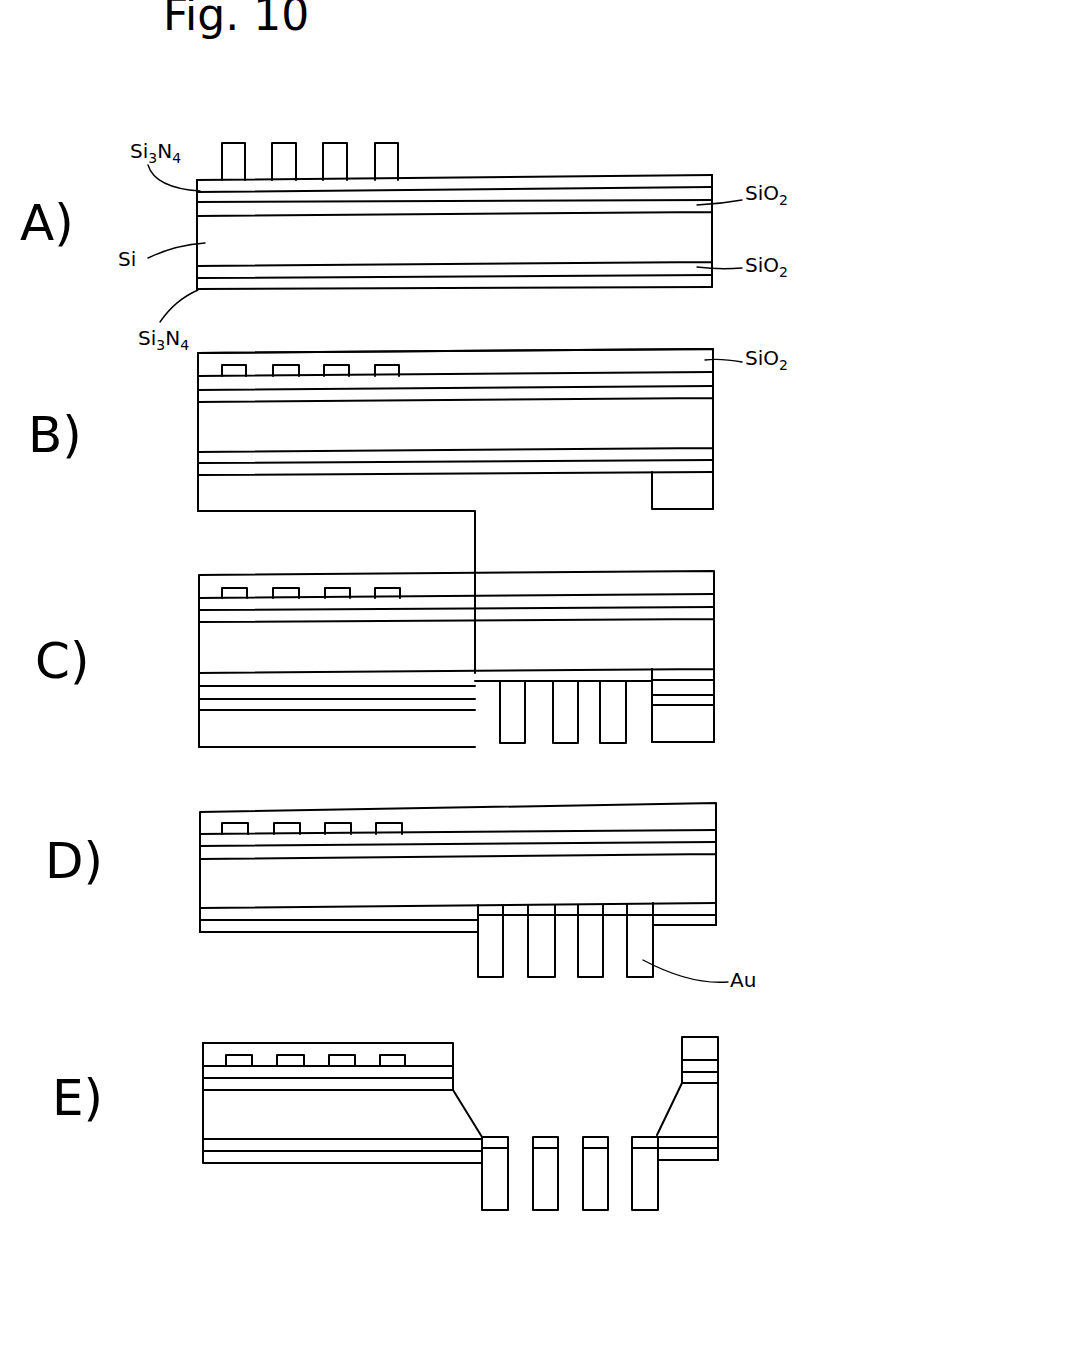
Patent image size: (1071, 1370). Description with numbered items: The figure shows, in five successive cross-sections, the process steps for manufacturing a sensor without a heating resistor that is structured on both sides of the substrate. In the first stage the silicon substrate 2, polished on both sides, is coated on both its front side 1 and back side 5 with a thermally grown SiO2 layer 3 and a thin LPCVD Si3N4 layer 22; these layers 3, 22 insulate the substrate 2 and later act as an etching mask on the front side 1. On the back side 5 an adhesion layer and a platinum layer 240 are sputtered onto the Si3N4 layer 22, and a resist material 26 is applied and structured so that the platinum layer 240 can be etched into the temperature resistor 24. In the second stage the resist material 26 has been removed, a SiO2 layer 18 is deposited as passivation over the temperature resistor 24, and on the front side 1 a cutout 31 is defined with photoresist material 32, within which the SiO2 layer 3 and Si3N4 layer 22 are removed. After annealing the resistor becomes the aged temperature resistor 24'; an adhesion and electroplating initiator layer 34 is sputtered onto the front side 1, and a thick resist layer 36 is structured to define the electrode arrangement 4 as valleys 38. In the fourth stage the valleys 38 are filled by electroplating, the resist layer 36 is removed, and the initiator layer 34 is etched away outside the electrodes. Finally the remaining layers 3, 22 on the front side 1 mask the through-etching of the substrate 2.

The front side 1 is at (428, 289).
The substrate 2 is at (698, 240).
The SiO2 layer 3 is at (650, 204).
The interdigital electrode arrangement 4 is at (645, 940).
The back side 5 is at (558, 158).
The SiO2 layer 18 is at (590, 360).
The Si3N4 layer 22 is at (700, 190).
The temperature resistor 24 is at (247, 387).
The annealed temperature resistor 24' is at (266, 559).
The resist material 26 is at (338, 145).
The cutout 31 is at (592, 483).
The photoresist material 32 is at (433, 490).
The adhesion and electroplating initiator layer 34 is at (645, 678).
The thick resist layer 36 is at (705, 718).
The valleys 38 is at (637, 727).
The platinum layer 240 is at (445, 180).